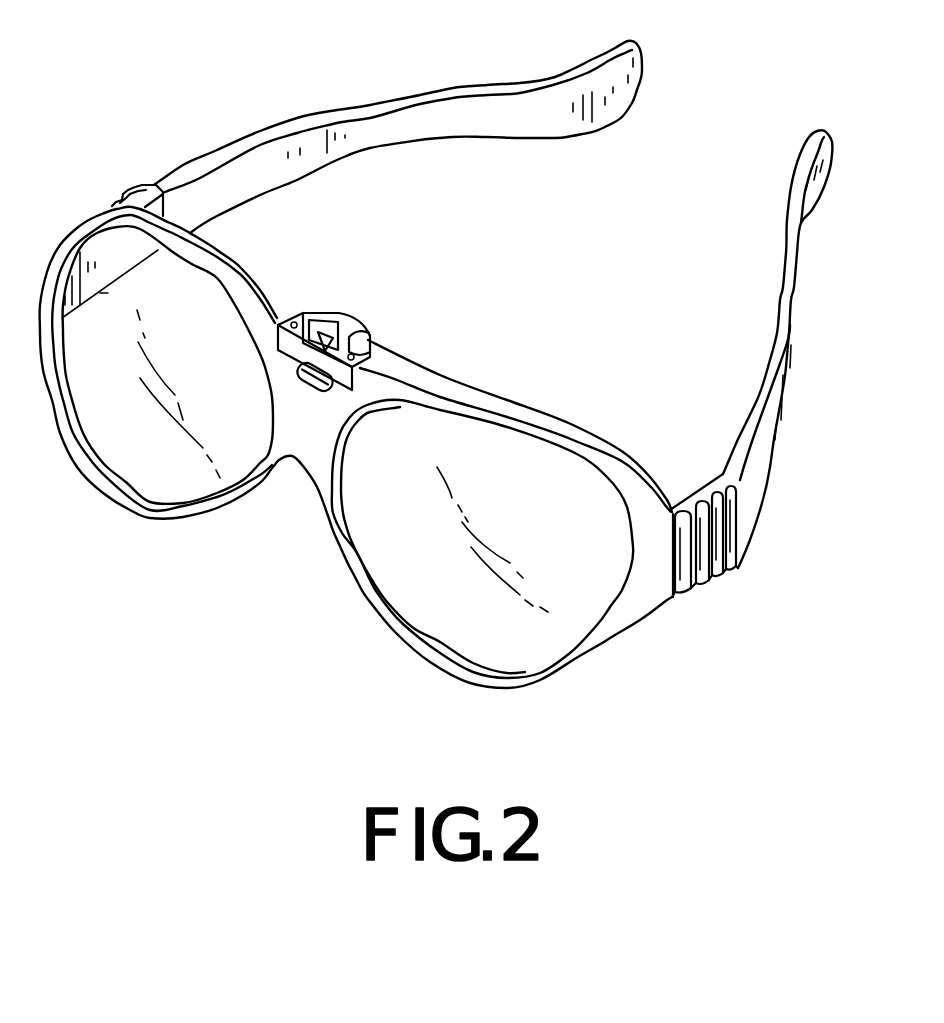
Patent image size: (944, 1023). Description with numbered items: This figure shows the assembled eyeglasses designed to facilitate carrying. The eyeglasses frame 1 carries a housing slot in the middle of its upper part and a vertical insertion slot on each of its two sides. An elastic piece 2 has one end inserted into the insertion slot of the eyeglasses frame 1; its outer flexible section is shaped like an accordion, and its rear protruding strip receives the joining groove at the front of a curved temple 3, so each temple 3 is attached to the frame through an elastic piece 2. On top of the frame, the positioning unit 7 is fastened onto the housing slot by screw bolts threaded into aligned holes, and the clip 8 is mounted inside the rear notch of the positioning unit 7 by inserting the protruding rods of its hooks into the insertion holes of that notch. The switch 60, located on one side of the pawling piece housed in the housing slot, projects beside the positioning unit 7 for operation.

The eyeglasses frame 1 is at (455, 393).
The elastic piece 2 is at (137, 186).
The temple 3 is at (337, 110).
The positioning unit 7 is at (373, 348).
The clip 8 is at (340, 327).
The switch 60 is at (313, 390).